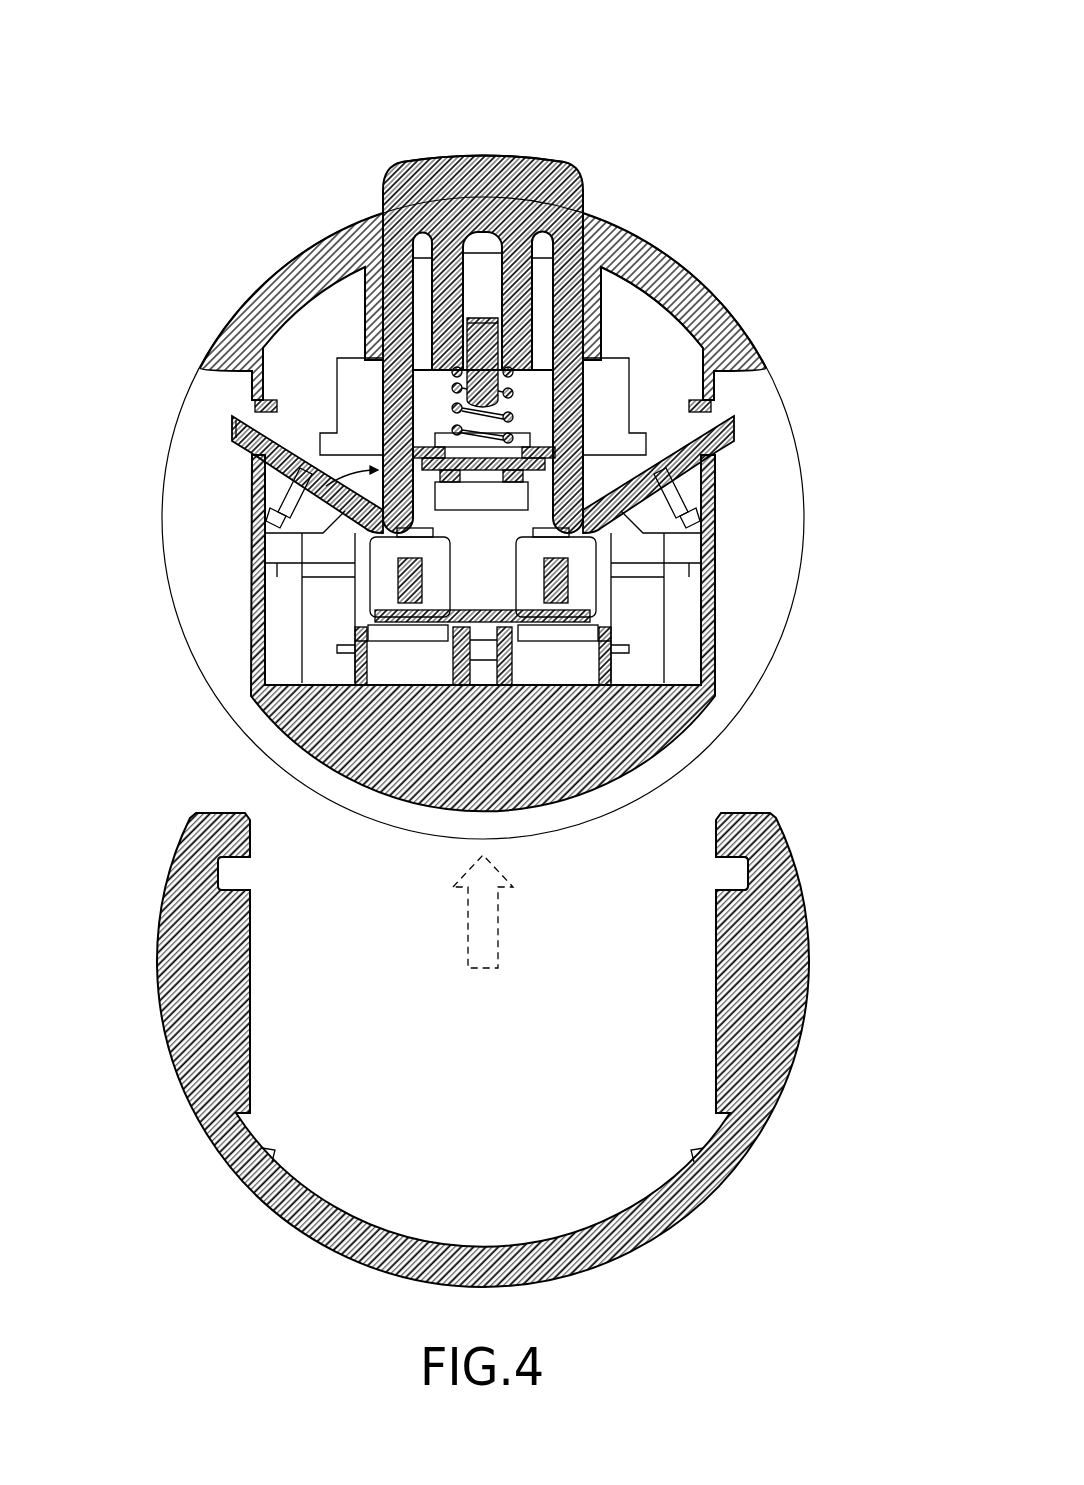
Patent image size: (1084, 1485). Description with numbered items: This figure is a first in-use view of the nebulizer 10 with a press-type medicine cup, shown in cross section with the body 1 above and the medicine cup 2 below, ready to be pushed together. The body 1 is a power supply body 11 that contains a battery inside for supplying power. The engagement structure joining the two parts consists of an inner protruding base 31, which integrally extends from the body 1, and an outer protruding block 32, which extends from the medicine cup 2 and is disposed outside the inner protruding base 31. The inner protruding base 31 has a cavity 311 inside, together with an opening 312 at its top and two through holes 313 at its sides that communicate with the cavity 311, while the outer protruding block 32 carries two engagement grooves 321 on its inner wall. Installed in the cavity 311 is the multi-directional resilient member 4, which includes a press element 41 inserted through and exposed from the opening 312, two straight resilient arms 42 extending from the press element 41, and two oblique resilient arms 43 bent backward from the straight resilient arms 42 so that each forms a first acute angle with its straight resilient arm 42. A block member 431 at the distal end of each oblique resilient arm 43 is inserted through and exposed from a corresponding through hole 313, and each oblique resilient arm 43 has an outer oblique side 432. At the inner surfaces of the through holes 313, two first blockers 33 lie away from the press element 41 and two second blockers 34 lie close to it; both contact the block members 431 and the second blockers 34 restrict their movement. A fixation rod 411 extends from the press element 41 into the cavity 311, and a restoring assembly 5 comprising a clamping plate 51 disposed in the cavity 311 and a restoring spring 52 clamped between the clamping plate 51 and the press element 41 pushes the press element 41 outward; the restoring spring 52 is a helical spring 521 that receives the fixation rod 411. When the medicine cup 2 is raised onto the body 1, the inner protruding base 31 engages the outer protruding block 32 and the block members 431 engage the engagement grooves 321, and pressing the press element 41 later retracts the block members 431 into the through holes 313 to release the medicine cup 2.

The nebulizer 10 is at (499, 43).
The body 1 is at (670, 244).
The power supply body 11 is at (803, 520).
The medicine cup 2 is at (830, 996).
The inner protruding base 31 is at (717, 306).
The cavity 311 is at (700, 303).
The opening 312 is at (400, 207).
The through holes 313 is at (260, 410).
The outer protruding block 32 is at (796, 912).
The engagement grooves 321 is at (745, 870).
The first blockers 33 is at (257, 463).
The second blockers 34 is at (278, 406).
The multi-directional resilient member 4 is at (509, 148).
The press element 41 is at (485, 172).
The fixation rod 411 is at (473, 373).
The straight resilient arms 42 is at (381, 402).
The oblique resilient arms 43 is at (262, 513).
The block members 431 is at (247, 440).
The outer oblique side 432 is at (258, 493).
The restoring assembly 5 is at (575, 450).
The clamping plate 51 is at (477, 472).
The restoring spring 52 is at (522, 392).
The helical spring 521 is at (531, 424).